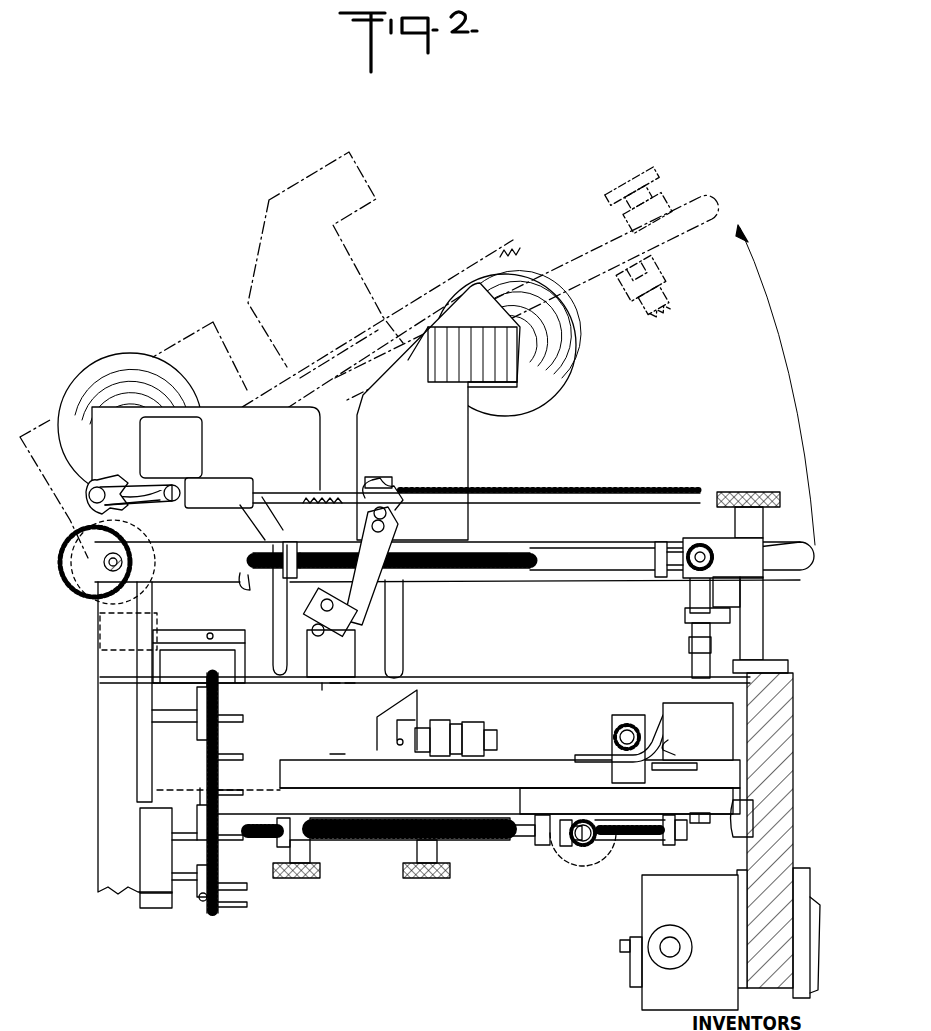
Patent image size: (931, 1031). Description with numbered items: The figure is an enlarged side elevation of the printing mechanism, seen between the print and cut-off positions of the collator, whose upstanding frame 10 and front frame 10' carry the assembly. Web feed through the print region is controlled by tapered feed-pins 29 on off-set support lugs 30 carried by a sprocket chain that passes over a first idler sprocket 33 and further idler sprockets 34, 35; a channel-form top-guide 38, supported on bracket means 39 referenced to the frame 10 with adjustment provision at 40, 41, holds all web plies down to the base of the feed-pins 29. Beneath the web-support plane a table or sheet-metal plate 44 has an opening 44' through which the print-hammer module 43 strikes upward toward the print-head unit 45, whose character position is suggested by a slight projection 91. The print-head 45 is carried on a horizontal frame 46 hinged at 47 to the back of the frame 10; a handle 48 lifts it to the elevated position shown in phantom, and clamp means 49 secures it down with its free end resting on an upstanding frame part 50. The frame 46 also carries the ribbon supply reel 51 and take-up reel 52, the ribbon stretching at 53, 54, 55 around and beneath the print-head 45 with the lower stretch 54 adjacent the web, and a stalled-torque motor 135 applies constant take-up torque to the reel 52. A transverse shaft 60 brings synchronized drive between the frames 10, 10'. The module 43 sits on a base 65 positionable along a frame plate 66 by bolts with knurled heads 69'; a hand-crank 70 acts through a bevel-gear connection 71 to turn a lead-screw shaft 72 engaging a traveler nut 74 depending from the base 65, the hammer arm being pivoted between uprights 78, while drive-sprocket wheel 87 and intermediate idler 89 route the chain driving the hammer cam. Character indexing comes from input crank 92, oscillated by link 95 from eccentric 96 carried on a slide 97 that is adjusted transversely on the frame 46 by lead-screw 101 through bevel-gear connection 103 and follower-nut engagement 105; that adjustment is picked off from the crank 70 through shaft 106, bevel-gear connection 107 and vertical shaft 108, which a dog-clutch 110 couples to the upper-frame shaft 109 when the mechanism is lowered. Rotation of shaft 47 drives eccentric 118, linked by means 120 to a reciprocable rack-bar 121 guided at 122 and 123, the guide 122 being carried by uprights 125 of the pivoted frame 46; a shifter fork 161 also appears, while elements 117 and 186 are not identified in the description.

The frame 10 is at (99, 738).
The front frame 10' is at (778, 829).
The feed-pins 29 is at (230, 720).
The off-set support lug 30 is at (227, 756).
The first idler sprocket 33 is at (204, 712).
The idler sprocket 34 is at (200, 835).
The idler sprocket 35 is at (201, 900).
The top-guide 38 is at (227, 658).
The bracket means 39 is at (188, 630).
The adjustment provision 40 is at (97, 627).
The adjustment provision 41 is at (212, 633).
The print-hammer module 43 is at (424, 710).
The table or sheet-metal plate 44 is at (447, 612).
The opening 44' is at (365, 699).
The print-head unit 45 is at (360, 659).
The horizontal frame 46 is at (607, 542).
The hinge shaft 47 is at (108, 566).
The handle 48 is at (718, 192).
The clamp means 49 is at (620, 187).
The upstanding part 50 is at (762, 627).
The ribbon supply reel 51 is at (520, 283).
The take-up reel 52 is at (126, 355).
The ribbon stretch 53 is at (403, 623).
The lower ribbon stretch 54 is at (335, 683).
The ribbon stretch 55 is at (248, 590).
The transverse shaft 60 is at (748, 815).
The base 65 is at (455, 788).
The table or plate 66 is at (508, 797).
The knurled heads 69' is at (361, 874).
The hand-crank 70 is at (585, 866).
The bevel-gear connection 71 is at (575, 848).
The transverse shaft 72 is at (336, 841).
The traveler nut 74 is at (280, 850).
The uprights 78 is at (337, 742).
The drive-sprocket wheel 87 is at (663, 756).
The intermediate idler 89 is at (628, 716).
The projection 91 is at (325, 683).
The input crank member 92 is at (320, 587).
The link 95 is at (400, 590).
The eccentric 96 is at (400, 527).
The slide 97 is at (361, 178).
The lead-screw 101 is at (584, 534).
The bevel-gear connection 103 is at (695, 540).
The follower-nut engagement 105 is at (283, 528).
The shaft 106 is at (650, 826).
The bevel-gear connection 107 is at (695, 826).
The vertical shaft 108 is at (693, 660).
The shaft 109 is at (636, 312).
The dog-clutch 110 is at (690, 614).
The knurled knob 117 is at (75, 575).
The eccentric 118 is at (112, 472).
The linking means 120 is at (158, 503).
The rack-bar 121 is at (408, 305).
The rack guide 122 is at (250, 482).
The rack guide 123 is at (388, 478).
The uprights 125 is at (236, 432).
The stalled-torque motor 135 is at (182, 462).
The shifter fork 161 is at (622, 968).
The bracket 186 is at (580, 753).